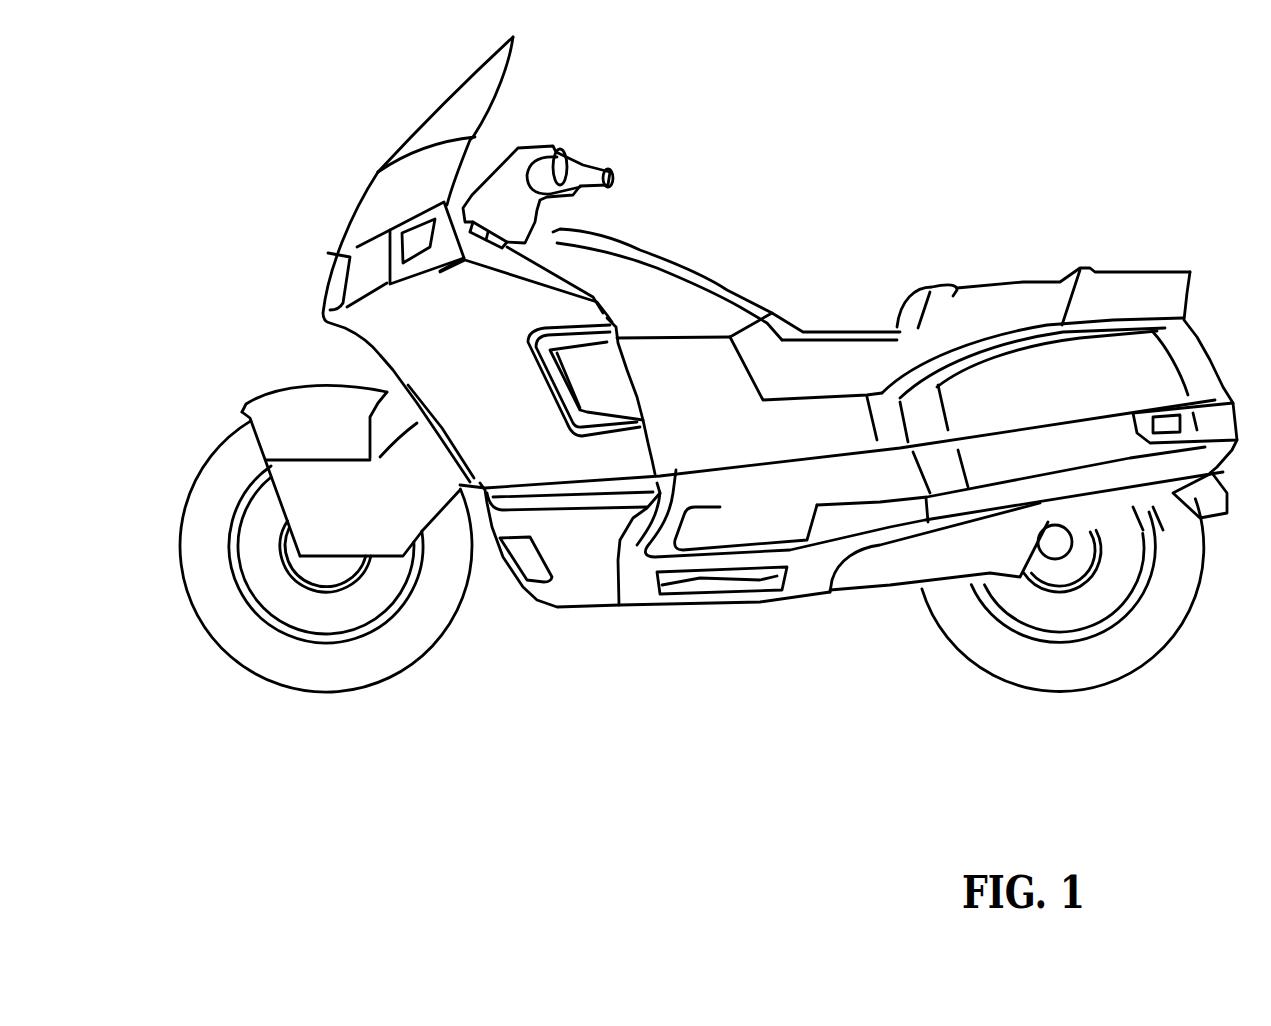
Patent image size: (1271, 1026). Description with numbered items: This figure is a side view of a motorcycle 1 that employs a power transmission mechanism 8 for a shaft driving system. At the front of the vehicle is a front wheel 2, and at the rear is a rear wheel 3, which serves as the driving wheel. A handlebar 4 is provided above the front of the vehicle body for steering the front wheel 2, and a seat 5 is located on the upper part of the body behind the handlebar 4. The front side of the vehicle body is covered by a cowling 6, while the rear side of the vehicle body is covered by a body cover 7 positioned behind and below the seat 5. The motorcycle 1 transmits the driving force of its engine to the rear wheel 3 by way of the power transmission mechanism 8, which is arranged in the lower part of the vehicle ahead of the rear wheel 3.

The motorcycle 1 is at (801, 288).
The front wheel 2 is at (198, 476).
The rear wheel 3 is at (1195, 567).
The handlebar 4 is at (583, 167).
The seat 5 is at (877, 340).
The cowling 6 is at (390, 330).
The body cover 7 is at (1113, 347).
The power transmission mechanism 8 is at (897, 574).